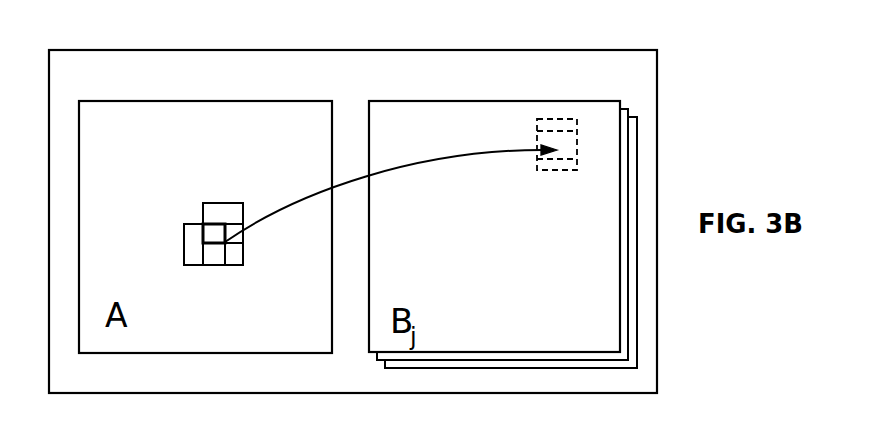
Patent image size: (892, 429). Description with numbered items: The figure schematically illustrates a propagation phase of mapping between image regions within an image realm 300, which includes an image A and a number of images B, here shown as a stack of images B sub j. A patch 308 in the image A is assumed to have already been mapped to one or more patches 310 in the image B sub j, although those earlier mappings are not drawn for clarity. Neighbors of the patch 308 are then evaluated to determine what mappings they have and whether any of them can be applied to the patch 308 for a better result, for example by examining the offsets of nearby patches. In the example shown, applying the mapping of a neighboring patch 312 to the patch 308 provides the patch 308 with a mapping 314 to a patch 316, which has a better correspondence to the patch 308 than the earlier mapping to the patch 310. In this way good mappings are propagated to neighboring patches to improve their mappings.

The image realm 300 is at (118, 50).
The patch 308 is at (220, 202).
The patch 310 is at (559, 170).
The patch 312 is at (237, 265).
The mapping 314 is at (330, 184).
The patch 316 is at (560, 119).